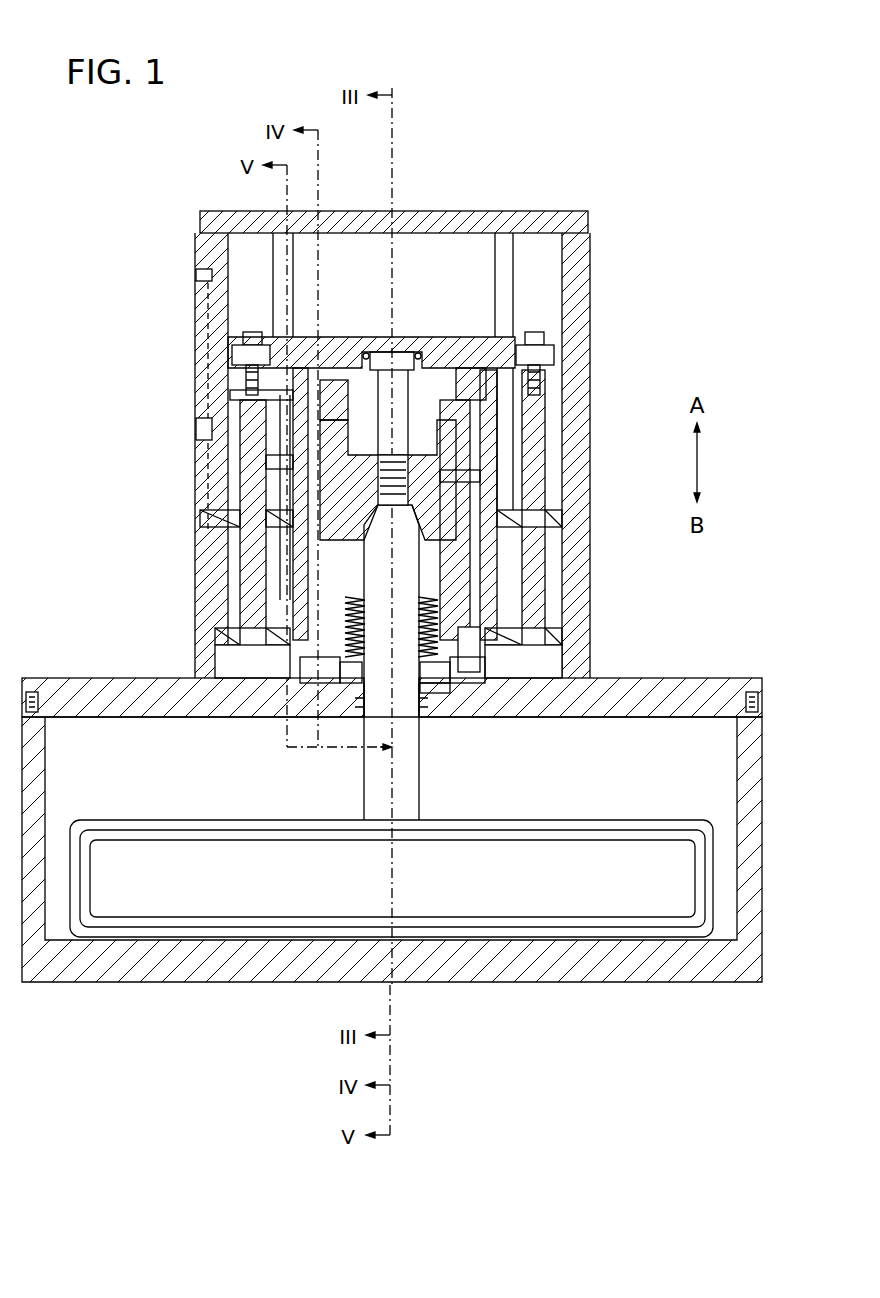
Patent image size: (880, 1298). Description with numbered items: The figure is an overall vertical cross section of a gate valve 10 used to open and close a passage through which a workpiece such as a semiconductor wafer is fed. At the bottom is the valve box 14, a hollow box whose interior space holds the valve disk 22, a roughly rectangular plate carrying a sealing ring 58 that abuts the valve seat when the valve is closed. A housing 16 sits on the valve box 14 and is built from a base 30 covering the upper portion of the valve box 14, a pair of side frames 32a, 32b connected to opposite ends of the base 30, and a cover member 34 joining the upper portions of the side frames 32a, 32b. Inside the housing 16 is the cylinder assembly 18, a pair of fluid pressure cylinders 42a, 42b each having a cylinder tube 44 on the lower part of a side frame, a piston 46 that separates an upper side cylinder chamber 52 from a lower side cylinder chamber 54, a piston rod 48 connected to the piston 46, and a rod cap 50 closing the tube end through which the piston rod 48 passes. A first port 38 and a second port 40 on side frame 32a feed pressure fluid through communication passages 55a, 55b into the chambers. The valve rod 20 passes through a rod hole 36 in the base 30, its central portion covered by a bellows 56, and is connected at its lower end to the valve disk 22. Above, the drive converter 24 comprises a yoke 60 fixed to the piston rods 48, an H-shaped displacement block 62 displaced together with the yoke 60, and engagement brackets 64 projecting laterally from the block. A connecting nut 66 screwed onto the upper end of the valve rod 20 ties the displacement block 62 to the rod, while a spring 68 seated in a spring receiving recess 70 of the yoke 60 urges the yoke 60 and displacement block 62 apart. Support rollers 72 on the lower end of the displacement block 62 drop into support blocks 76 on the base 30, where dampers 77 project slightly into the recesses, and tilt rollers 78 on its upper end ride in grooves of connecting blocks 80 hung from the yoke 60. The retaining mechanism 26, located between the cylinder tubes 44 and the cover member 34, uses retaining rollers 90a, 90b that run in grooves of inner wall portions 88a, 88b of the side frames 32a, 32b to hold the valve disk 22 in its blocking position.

The gate valve 10 is at (618, 157).
The valve box 14 is at (170, 980).
The housing 16 is at (390, 353).
The cylinder assembly 18 is at (394, 595).
The valve rod 20 is at (410, 812).
The valve disk 22 is at (620, 855).
The drive converter 24 is at (515, 417).
The retaining mechanism 26 is at (284, 493).
The base 30 is at (708, 690).
The side frame 32a is at (179, 383).
The side frame 32b is at (577, 292).
The cover member 34 is at (462, 212).
The rod hole 36 is at (366, 708).
The first port 38 is at (198, 422).
The second port 40 is at (198, 275).
The fluid pressure cylinder 42a is at (190, 595).
The fluid pressure cylinder 42b is at (600, 593).
The cylinder tube 44 is at (222, 650).
The piston 46 is at (222, 633).
The piston rod 48 is at (245, 442).
The rod cap 50 is at (222, 520).
The upper side cylinder chamber 52 is at (546, 566).
The lower side cylinder chamber 54 is at (548, 660).
The communication passage 55a is at (266, 545).
The communication passage 55b is at (207, 320).
The bellows 56 is at (430, 700).
The sealing ring 58 is at (160, 838).
The yoke 60 is at (460, 346).
The displacement block 62 is at (336, 420).
The engagement bracket 64 is at (482, 477).
The connecting nut 66 is at (424, 465).
The spring 68 is at (363, 350).
The spring receiving recess 70 is at (406, 352).
The support roller 72 is at (470, 652).
The support block 76 is at (306, 688).
The damper 77 is at (323, 690).
The tilt roller 78 is at (525, 450).
The connecting block 80 is at (458, 378).
The inner wall portion 88a is at (282, 285).
The inner wall portion 88b is at (506, 283).
The retaining roller 90a is at (266, 466).
The retaining roller 90b is at (265, 397).